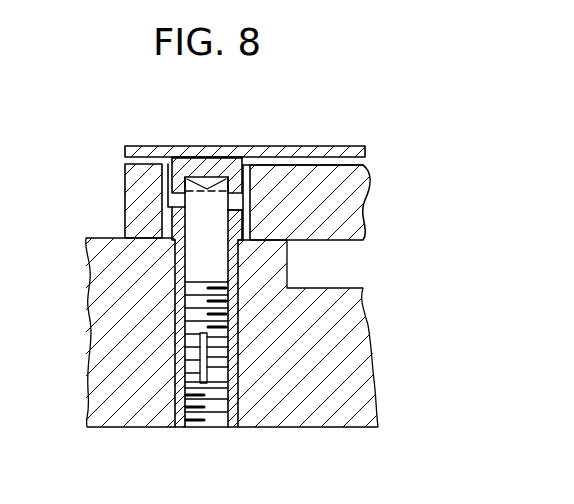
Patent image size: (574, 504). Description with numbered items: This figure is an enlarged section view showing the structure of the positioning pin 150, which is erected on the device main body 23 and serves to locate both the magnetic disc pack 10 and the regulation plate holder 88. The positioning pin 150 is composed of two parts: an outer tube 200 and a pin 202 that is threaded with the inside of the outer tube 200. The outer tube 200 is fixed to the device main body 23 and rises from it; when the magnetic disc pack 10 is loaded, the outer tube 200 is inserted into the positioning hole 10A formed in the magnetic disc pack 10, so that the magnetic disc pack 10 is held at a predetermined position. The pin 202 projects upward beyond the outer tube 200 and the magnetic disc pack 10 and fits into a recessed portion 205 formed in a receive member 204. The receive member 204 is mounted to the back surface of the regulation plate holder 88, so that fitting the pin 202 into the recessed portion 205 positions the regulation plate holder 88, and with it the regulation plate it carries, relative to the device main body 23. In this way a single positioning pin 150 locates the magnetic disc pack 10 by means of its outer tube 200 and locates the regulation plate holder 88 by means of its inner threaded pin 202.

The regulation plate holder 88 is at (322, 148).
The magnetic disc pack 10 is at (343, 183).
The positioning hole 10A is at (167, 193).
The positioning pin 150 is at (240, 202).
The receive member 204 is at (190, 158).
The recessed portion 205 is at (222, 164).
The pin 202 is at (217, 268).
The outer tube 200 is at (233, 345).
The device main body 23 is at (303, 410).